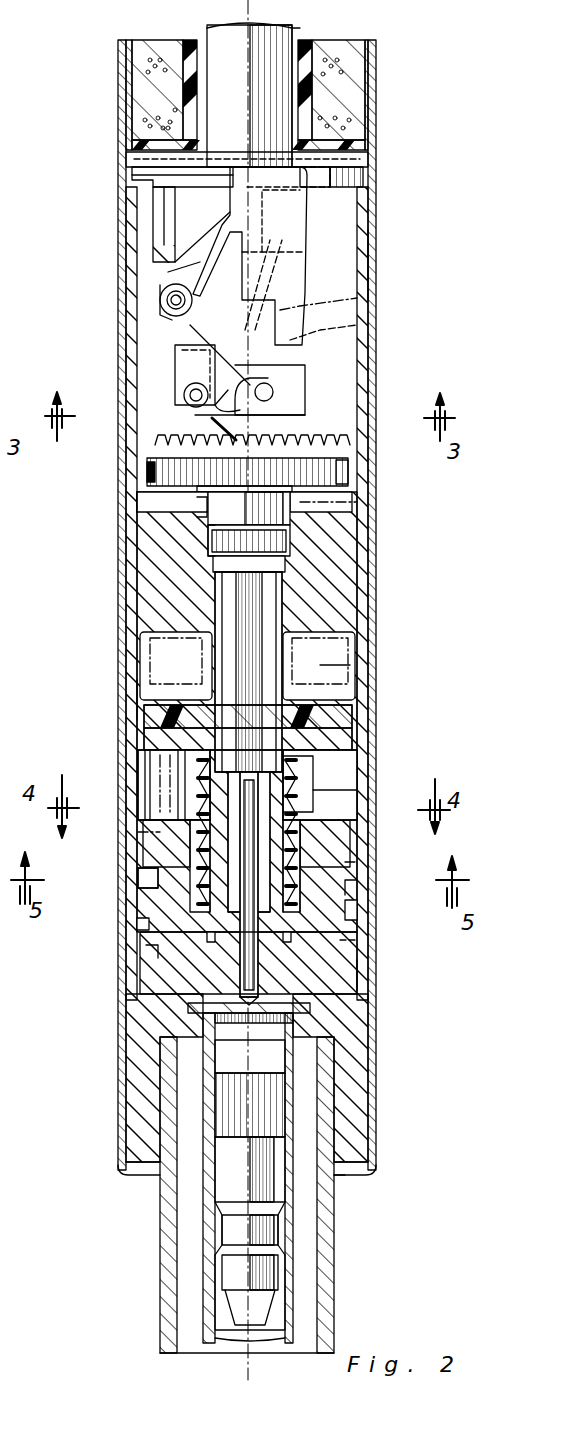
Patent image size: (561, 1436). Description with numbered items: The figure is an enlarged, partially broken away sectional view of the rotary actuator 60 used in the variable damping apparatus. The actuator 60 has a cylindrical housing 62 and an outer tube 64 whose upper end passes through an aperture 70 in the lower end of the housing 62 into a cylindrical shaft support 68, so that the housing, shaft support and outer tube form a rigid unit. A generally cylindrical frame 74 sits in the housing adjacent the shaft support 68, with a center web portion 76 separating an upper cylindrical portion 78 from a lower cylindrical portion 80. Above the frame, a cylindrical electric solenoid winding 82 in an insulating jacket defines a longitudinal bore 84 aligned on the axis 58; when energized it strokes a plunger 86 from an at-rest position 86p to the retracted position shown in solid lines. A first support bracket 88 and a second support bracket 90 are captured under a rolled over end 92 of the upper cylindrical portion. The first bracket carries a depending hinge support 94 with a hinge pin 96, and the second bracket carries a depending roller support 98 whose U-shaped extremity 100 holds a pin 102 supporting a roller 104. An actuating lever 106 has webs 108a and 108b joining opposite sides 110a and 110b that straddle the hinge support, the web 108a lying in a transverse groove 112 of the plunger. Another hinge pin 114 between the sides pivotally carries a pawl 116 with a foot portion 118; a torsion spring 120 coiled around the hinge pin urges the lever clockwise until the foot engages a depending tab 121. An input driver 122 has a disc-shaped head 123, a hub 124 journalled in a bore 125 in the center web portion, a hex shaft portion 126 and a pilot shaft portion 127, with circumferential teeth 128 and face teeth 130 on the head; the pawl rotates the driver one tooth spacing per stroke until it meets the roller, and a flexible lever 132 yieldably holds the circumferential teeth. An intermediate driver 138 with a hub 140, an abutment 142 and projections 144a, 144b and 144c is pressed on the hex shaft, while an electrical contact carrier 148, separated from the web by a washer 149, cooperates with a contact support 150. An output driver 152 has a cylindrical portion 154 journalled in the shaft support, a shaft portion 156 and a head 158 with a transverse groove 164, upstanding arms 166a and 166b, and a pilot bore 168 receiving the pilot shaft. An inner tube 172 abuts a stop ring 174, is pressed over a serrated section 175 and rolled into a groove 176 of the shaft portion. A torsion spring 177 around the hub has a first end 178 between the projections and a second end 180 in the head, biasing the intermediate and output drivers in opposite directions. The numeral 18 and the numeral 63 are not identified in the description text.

The port 18 is at (150, 874).
The axis 58 is at (207, 32).
The actuator 60 is at (374, 240).
The cylindrical housing 62 is at (126, 628).
The wall 63 is at (358, 975).
The outer tube 64 is at (165, 1212).
The cylindrical shaft support 68 is at (130, 988).
The aperture 70 is at (350, 1175).
The cylindrical frame 74 is at (135, 532).
The center web portion 76 is at (150, 585).
The upper cylindrical portion 78 is at (370, 274).
The lower cylindrical portion 80 is at (137, 700).
The electric solenoid winding 82 is at (338, 92).
The longitudinal bore 84 is at (168, 82).
The plunger 86 is at (300, 30).
The at-rest position 86p is at (360, 298).
The first support bracket 88 is at (137, 178).
The second support bracket 90 is at (140, 170).
The rolled over end 92 is at (365, 162).
The hinge support 94 is at (160, 212).
The hinge pin 96 is at (162, 300).
The roller support 98 is at (287, 276).
The U-shaped extremity 100 is at (272, 390).
The pin 102 is at (300, 368).
The roller 104 is at (306, 412).
The actuating lever 106 is at (176, 334).
The web 108a is at (283, 240).
The web 108b is at (358, 326).
The side of the lever 110a is at (185, 368).
The side of the lever 110b is at (182, 353).
The transverse groove 112 is at (345, 188).
The hinge pin 114 is at (168, 442).
The pawl 116 is at (172, 503).
The foot portion 118 is at (264, 508).
The torsion spring 120 is at (178, 278).
The depending tab 121 is at (184, 395).
The input driver 122 is at (285, 566).
The disc-shaped head 123 is at (140, 502).
The hub 124 is at (290, 534).
The bore 125 is at (215, 520).
The hex shaft portion 126 is at (258, 605).
The pilot shaft portion 127 is at (246, 870).
The circumferential teeth 128 is at (152, 470).
The face teeth 130 is at (300, 446).
The flexible lever 132 is at (358, 514).
The intermediate driver 138 is at (352, 736).
The hub 140 is at (352, 758).
The abutment 142 is at (160, 762).
The projection 144a is at (320, 817).
The projection 144b is at (310, 794).
The projection 144c is at (330, 772).
The electrical contact carrier 148 is at (345, 704).
The washer 149 is at (340, 666).
The contact support 150 is at (340, 643).
The output driver 152 is at (340, 917).
The cylindrical portion 154 is at (146, 952).
The shaft portion 156 is at (203, 1107).
The head 158 is at (360, 882).
The transverse groove 164 is at (138, 926).
The upstanding arm 166a is at (150, 834).
The upstanding arm 166b is at (360, 869).
The pilot bore 168 is at (190, 1007).
The inner tube 172 is at (290, 1302).
The stop ring 174 is at (294, 1012).
The serrated section 175 is at (262, 1097).
The groove 176 is at (262, 1228).
The torsion spring 177 is at (262, 852).
The first end 178 is at (352, 718).
The second end 180 is at (380, 952).